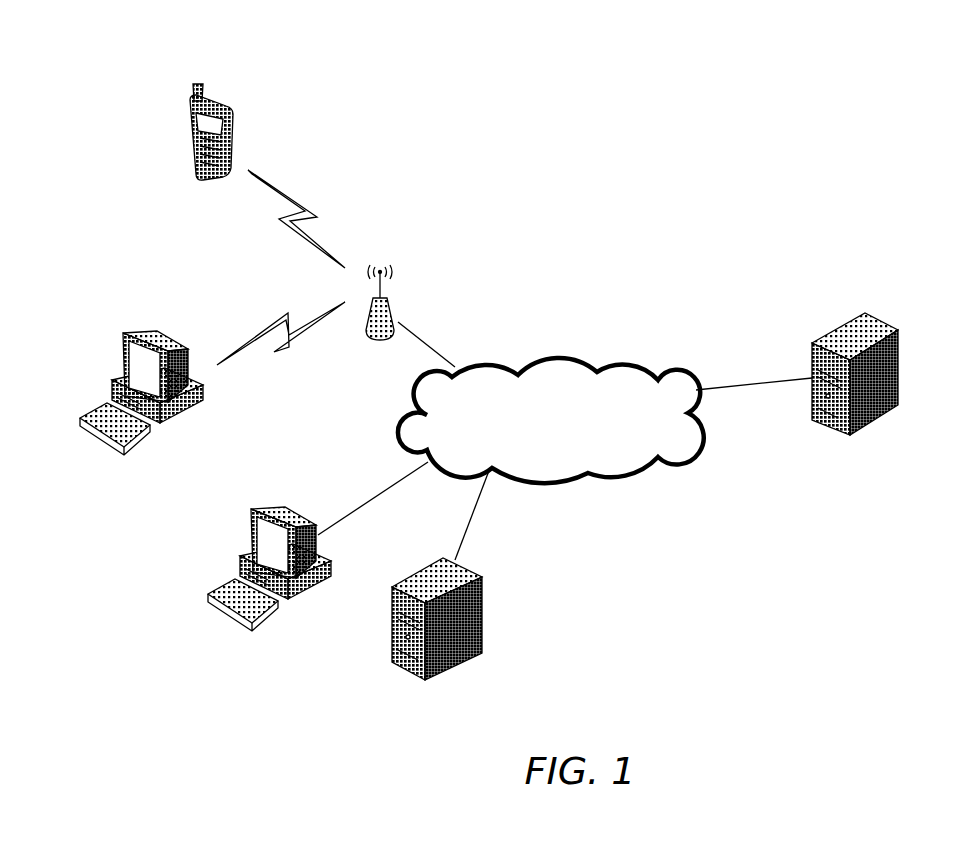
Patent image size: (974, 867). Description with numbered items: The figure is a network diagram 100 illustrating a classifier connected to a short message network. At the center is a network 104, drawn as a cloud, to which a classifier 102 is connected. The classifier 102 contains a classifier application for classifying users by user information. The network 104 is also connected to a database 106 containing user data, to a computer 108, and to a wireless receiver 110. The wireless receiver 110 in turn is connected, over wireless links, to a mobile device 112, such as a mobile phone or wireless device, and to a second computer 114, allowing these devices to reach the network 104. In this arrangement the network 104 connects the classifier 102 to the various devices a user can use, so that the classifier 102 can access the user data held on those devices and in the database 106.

The network diagram 100 is at (685, 215).
The classifier 102 is at (870, 330).
The network 104 is at (584, 474).
The database 106 is at (393, 663).
The computer 108 is at (233, 617).
The wireless receiver 110 is at (385, 295).
The mobile device 112 is at (228, 105).
The computer 114 is at (133, 333).